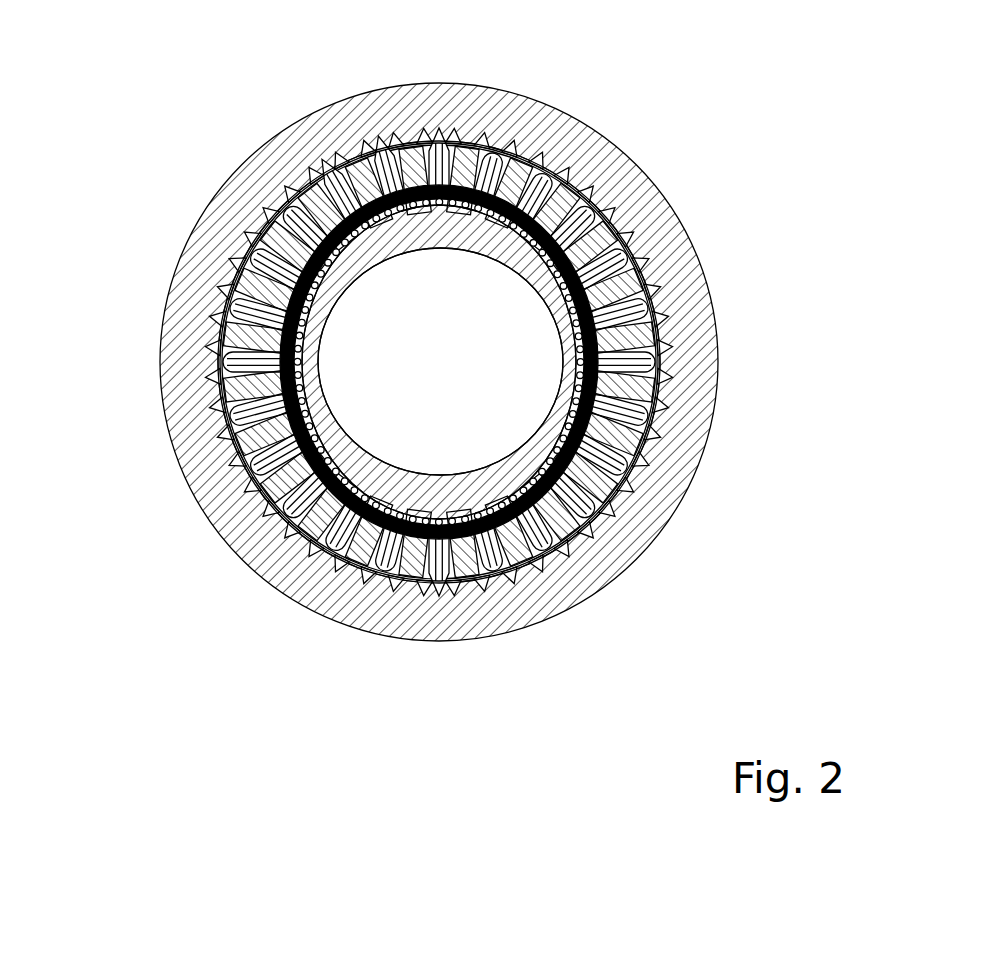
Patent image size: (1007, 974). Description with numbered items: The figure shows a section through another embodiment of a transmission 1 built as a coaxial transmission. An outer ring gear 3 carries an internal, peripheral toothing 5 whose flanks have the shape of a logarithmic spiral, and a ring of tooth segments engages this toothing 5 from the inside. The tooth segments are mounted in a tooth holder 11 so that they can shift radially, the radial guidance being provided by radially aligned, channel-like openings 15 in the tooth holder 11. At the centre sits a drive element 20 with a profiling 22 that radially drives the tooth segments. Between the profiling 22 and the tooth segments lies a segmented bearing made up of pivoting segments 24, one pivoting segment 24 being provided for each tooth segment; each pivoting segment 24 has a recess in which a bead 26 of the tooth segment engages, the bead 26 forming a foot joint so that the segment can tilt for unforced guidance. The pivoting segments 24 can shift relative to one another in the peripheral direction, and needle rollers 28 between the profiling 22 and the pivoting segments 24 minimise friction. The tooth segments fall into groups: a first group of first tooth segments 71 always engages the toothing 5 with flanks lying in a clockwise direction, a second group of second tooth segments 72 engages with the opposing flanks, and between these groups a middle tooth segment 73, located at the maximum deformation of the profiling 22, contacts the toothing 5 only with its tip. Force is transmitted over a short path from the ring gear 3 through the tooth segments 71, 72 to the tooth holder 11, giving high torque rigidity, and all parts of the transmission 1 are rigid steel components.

The transmission 1 is at (104, 179).
The ring gear 3 is at (340, 101).
The toothing 5 is at (662, 438).
The tooth holder 11 is at (657, 385).
The openings 15 is at (630, 200).
The drive element 20 is at (347, 427).
The profiling 22 is at (368, 468).
The pivoting segments 24 is at (528, 264).
The bead 26 is at (322, 283).
The needle rollers 28 is at (316, 322).
The first tooth segments 71 is at (520, 132).
The second tooth segments 72 is at (371, 136).
The middle tooth segment 73 is at (452, 133).